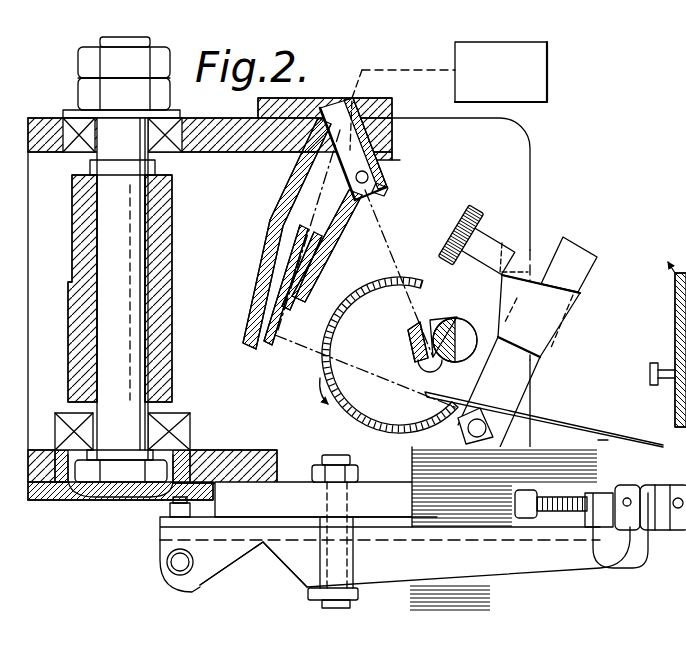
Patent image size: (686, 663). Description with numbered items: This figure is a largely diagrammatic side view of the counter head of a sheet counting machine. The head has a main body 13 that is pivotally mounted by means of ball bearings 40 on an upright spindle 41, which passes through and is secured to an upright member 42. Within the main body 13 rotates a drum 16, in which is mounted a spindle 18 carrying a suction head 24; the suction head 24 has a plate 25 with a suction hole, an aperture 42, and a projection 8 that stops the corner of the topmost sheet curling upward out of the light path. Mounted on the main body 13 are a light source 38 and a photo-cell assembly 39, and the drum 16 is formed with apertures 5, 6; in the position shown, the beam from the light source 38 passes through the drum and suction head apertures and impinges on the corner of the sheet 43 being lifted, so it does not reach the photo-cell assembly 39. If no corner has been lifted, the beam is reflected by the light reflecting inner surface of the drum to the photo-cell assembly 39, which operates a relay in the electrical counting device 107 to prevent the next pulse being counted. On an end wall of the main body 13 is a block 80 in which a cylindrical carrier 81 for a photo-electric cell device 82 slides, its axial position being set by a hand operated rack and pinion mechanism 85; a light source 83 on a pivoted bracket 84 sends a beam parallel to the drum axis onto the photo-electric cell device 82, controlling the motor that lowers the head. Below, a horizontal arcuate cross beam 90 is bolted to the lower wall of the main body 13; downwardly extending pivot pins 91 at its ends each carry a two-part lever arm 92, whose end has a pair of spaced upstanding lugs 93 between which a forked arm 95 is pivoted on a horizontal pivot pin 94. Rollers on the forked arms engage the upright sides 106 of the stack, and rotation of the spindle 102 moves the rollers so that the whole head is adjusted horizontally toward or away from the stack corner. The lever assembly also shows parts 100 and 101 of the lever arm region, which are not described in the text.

The aperture 5 is at (398, 285).
The aperture 6 is at (328, 350).
The projection 8 is at (423, 363).
The main body 13 is at (222, 143).
The drum 16 is at (355, 414).
The spindle 18 is at (481, 321).
The suction head 24 is at (441, 309).
The plate 25 is at (408, 342).
The light source 38 is at (358, 157).
The photo-cell assembly 39 is at (318, 280).
The ball bearings 40 is at (82, 125).
The spindle 41 is at (130, 272).
The upright member 42 is at (157, 307).
The sheet 43 is at (537, 420).
The block 80 is at (557, 333).
The cylindrical carrier 81 is at (578, 260).
The photo-electric cell device 82 is at (495, 430).
The light source 83 is at (515, 480).
The bracket 84 is at (447, 493).
The rack and pinion mechanism 85 is at (487, 242).
The arcuate cross beam 90 is at (293, 502).
The pivot pins 91 is at (363, 592).
The two-part lever arm 92 is at (482, 559).
The lugs 93 is at (607, 500).
The horizontal pivot pin 94 is at (562, 510).
The forked arm 95 is at (645, 530).
The arm edge 100 is at (200, 567).
The gusset 101 is at (230, 556).
The spindle 102 is at (170, 560).
The upright sides 106 is at (603, 462).
The electrical counting device 107 is at (532, 87).